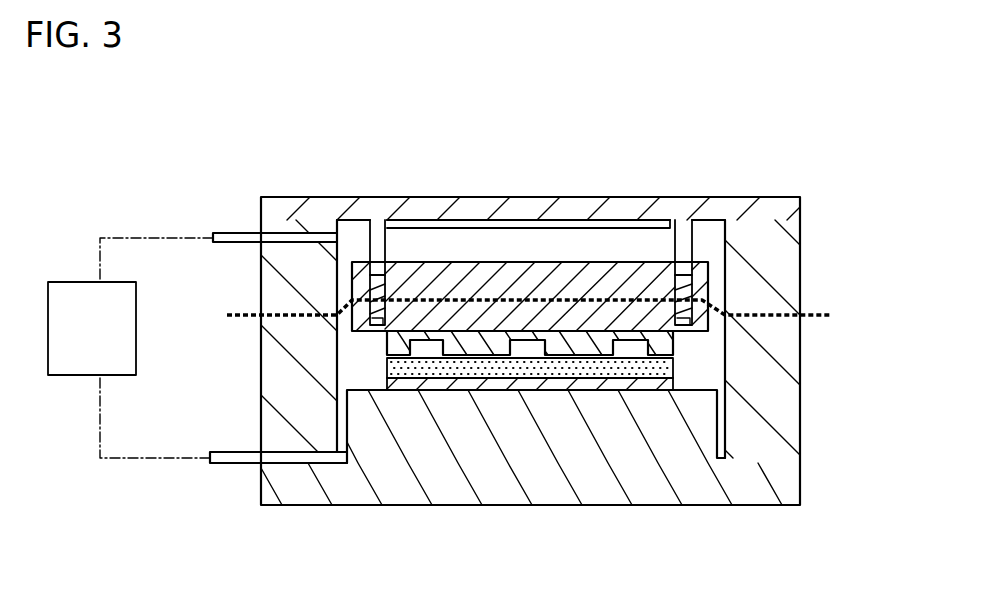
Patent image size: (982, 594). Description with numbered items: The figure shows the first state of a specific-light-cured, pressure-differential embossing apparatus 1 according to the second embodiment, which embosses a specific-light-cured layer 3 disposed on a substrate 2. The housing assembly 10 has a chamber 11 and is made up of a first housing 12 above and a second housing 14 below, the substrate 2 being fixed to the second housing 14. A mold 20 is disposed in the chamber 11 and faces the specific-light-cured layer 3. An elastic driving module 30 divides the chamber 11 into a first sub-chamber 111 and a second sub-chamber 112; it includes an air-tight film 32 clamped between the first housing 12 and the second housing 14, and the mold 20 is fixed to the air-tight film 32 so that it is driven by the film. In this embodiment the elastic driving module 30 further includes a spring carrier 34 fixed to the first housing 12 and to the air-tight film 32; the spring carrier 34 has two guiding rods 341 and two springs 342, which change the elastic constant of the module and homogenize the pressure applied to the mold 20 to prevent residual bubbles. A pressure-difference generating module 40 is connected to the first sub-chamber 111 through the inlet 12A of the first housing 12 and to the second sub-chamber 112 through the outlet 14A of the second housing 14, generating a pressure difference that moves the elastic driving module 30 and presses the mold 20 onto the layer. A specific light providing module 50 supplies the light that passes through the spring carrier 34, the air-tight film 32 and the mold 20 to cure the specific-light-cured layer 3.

The pressure-differential embossing apparatus 1 is at (592, 188).
The substrate 2 is at (387, 385).
The specific-light-cured layer 3 is at (387, 368).
The housing assembly 10 is at (265, 55).
The chamber 11 is at (375, 55).
The first housing 12 is at (384, 197).
The inlet 12A is at (213, 232).
The second housing 14 is at (448, 522).
The outlet 14A is at (210, 460).
The mold 20 is at (387, 345).
The elastic driving module 30 is at (493, 55).
The air-tight film 32 is at (197, 314).
The spring carrier 34 is at (514, 262).
The pressure-difference generating module 40 is at (80, 293).
The specific light providing module 50 is at (660, 228).
The first sub-chamber 111 is at (815, 232).
The second sub-chamber 112 is at (827, 353).
The guiding rods 341 is at (375, 236).
The springs 342 is at (368, 276).